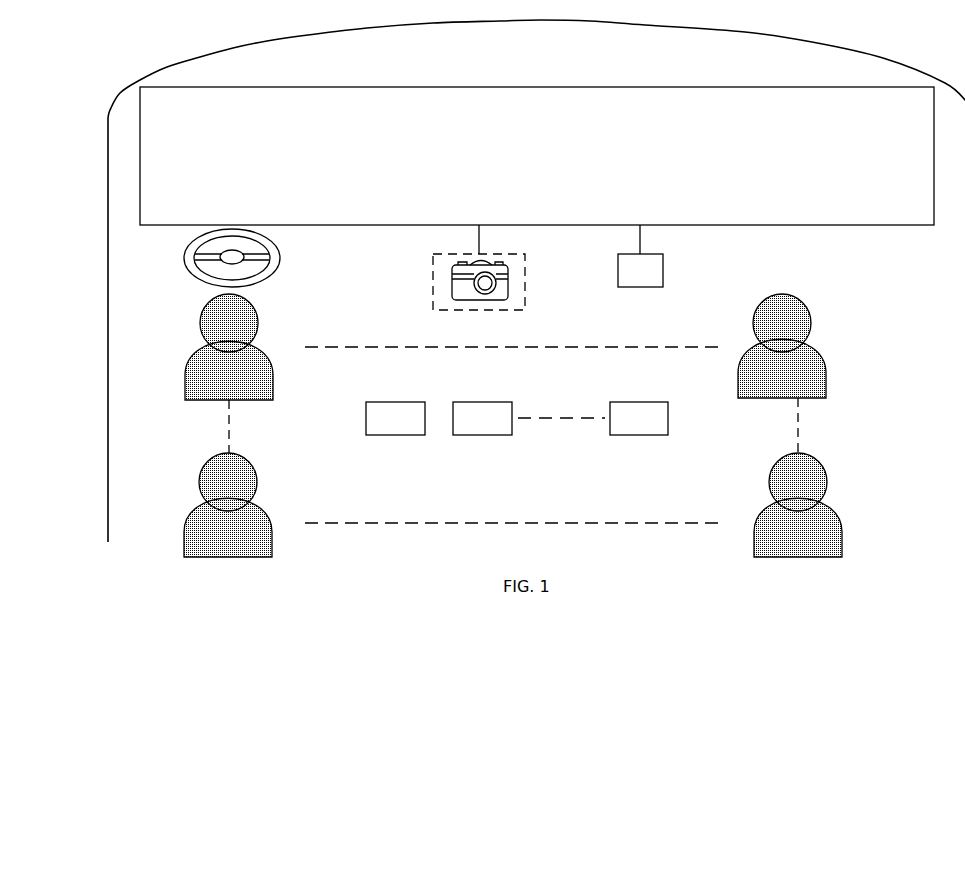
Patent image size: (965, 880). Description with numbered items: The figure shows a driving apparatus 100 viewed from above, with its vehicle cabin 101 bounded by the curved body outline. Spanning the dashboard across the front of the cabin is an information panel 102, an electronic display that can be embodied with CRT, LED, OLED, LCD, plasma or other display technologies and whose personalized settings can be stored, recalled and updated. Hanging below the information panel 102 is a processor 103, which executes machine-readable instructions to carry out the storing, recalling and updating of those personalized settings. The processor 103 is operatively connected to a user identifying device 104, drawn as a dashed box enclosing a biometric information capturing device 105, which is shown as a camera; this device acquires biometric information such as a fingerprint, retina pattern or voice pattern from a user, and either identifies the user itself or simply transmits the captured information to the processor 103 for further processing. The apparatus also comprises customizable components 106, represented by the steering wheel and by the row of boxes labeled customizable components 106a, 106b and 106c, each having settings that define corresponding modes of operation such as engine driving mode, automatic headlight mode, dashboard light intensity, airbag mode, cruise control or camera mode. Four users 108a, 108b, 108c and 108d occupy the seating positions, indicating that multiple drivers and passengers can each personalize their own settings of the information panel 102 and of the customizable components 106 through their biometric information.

The driving apparatus 100 is at (883, 58).
The vehicle cabin 101 is at (547, 53).
The information panel 102 is at (589, 87).
The processor 103 is at (657, 280).
The user identifying device 104 is at (525, 283).
The biometric information capturing device 105 is at (508, 270).
The customizable component 106 is at (280, 258).
The customizable component 106a is at (417, 427).
The customizable component 106b is at (505, 427).
The customizable component 106c is at (661, 427).
The user 108a is at (250, 304).
The user 108b is at (802, 304).
The user 108c is at (253, 468).
The user 108d is at (820, 466).